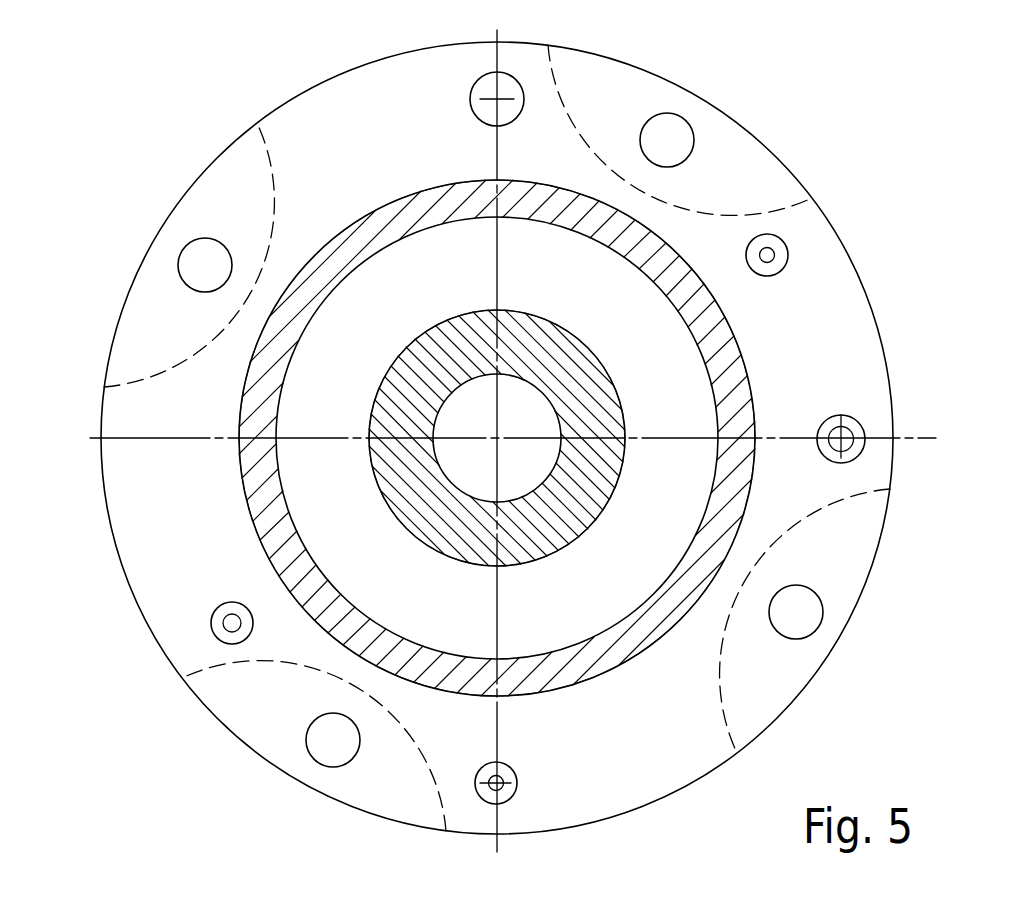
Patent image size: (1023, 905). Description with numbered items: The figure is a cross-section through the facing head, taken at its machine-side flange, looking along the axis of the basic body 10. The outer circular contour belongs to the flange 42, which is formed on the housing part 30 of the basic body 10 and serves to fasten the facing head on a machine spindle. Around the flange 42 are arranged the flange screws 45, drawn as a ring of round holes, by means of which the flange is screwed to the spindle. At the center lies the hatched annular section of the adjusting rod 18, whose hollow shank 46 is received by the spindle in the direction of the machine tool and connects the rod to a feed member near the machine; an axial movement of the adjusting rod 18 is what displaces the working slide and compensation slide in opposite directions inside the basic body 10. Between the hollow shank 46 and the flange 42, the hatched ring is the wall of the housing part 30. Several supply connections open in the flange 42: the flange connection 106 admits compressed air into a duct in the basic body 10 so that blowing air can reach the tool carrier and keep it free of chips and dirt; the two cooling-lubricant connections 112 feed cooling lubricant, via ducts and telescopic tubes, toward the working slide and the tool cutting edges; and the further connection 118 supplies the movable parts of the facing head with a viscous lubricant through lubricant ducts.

The basic body 10 is at (572, 670).
The adjusting rod 18 is at (543, 532).
The housing part 30 is at (613, 642).
The flange 42 is at (837, 328).
The flange screws 45 is at (670, 135).
The hollow shank 46 is at (560, 522).
The flange connection 106 is at (848, 435).
The cooling-lubricant connections 112 is at (777, 247).
The further connection 118 is at (505, 783).